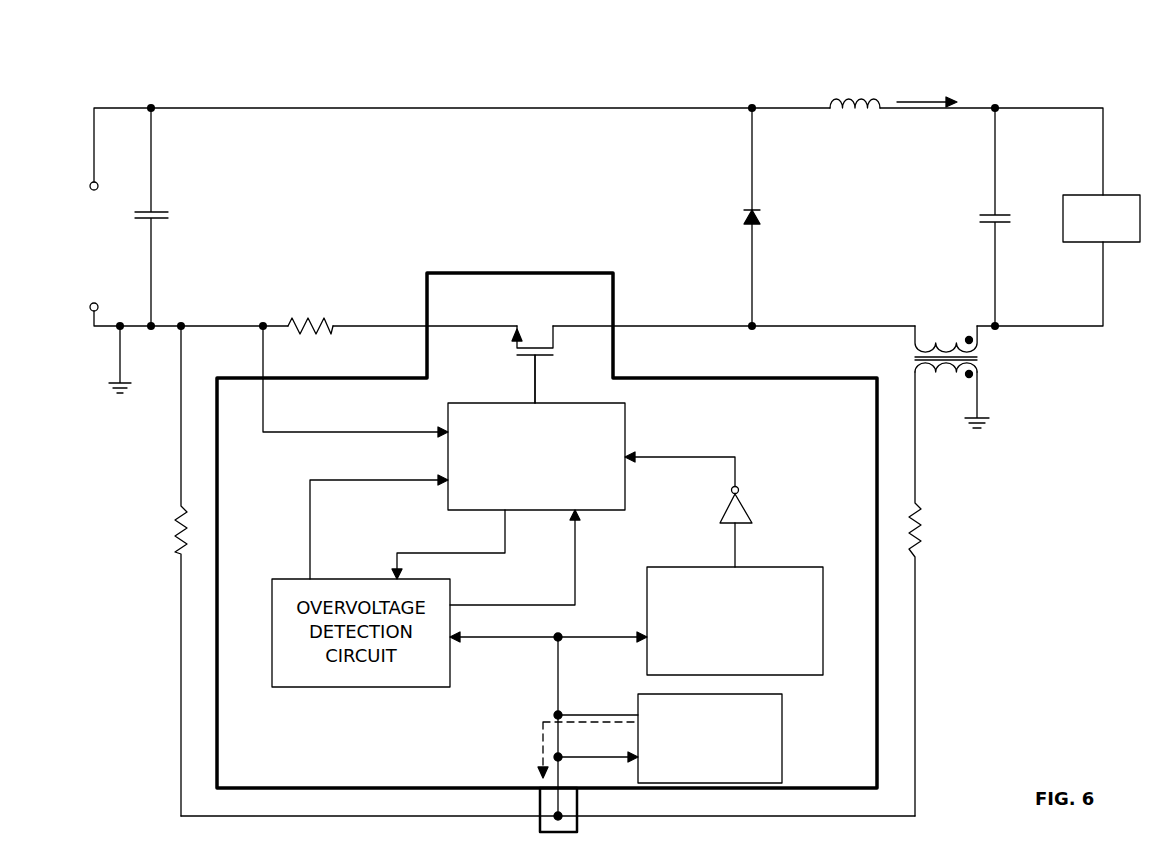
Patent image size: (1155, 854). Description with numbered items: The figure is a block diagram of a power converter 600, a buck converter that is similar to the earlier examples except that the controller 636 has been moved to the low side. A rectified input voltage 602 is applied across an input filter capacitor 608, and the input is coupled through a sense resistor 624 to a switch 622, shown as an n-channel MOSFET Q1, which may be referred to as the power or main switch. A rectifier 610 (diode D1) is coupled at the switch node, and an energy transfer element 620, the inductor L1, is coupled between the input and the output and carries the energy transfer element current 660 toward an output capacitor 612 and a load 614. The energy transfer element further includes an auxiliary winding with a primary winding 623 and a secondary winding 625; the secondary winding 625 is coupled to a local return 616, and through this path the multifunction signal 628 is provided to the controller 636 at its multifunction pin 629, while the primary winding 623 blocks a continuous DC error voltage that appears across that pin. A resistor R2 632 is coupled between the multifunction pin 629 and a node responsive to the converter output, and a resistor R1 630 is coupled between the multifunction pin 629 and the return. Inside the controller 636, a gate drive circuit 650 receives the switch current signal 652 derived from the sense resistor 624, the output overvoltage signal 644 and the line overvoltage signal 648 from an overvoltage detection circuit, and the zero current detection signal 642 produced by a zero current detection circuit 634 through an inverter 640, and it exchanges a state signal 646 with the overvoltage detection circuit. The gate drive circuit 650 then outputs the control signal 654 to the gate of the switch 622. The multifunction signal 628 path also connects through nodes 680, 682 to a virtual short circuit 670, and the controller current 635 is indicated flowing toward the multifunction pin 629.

The power converter 600 is at (1082, 39).
The rectified input voltage 602 is at (75, 250).
The input filter capacitor 608 is at (200, 204).
The rectifier 610 is at (793, 208).
The output capacitor 612 is at (1043, 207).
The load 614 is at (1078, 250).
The local return 616 is at (105, 387).
The energy transfer element 620 is at (865, 131).
The switch 622 is at (517, 314).
The primary winding 623 is at (937, 334).
The sense resistor 624 is at (314, 290).
The secondary winding 625 is at (977, 371).
The multifunction signal 628 is at (511, 689).
The multifunction pin 629 is at (582, 822).
The resistor R1 630 is at (970, 531).
The resistor R2 632 is at (130, 532).
The zero current detection circuit 634 is at (809, 564).
The current IC 635 is at (506, 745).
The controller 636 is at (548, 273).
The inverter 640 is at (751, 513).
The zero current detection signal 642 is at (774, 468).
The output overvoltage signal 644 is at (276, 514).
The state signal 646 is at (408, 532).
The line overvoltage signal 648 is at (625, 551).
The gate drive circuit 650 is at (625, 413).
The switch current signal 652 is at (350, 412).
The control signal 654 is at (485, 382).
The energy transfer element current 660 is at (945, 73).
The virtual short circuit 670 is at (790, 727).
The node 680 is at (563, 761).
The node 682 is at (563, 715).